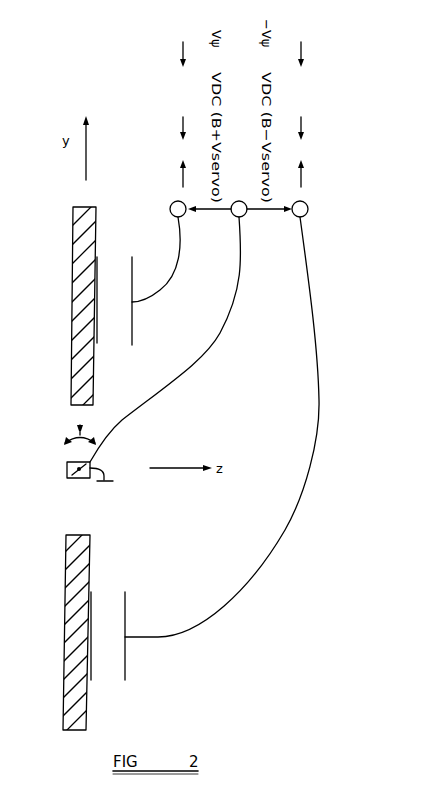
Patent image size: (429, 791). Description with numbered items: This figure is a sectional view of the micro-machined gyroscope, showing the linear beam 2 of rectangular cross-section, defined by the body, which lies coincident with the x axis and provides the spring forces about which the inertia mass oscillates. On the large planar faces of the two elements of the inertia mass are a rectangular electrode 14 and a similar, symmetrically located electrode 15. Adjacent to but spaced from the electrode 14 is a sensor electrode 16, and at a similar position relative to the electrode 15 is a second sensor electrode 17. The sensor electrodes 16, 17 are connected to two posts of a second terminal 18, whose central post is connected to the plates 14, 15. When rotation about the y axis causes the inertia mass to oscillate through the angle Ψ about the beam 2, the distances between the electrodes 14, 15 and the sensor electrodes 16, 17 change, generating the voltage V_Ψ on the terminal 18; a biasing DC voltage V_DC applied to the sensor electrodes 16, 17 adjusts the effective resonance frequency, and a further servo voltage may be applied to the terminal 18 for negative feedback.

The linear beam 2 is at (67, 470).
The electrode 14 is at (94, 300).
The electrode 15 is at (88, 622).
The sensor electrode 16 is at (132, 277).
The second sensor electrode 17 is at (126, 663).
The second terminal 18 is at (308, 224).